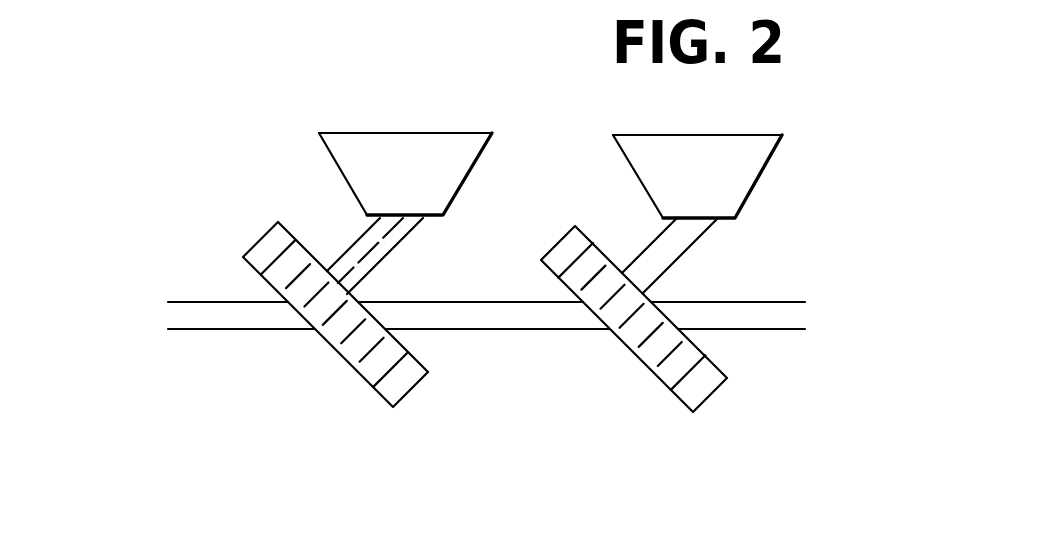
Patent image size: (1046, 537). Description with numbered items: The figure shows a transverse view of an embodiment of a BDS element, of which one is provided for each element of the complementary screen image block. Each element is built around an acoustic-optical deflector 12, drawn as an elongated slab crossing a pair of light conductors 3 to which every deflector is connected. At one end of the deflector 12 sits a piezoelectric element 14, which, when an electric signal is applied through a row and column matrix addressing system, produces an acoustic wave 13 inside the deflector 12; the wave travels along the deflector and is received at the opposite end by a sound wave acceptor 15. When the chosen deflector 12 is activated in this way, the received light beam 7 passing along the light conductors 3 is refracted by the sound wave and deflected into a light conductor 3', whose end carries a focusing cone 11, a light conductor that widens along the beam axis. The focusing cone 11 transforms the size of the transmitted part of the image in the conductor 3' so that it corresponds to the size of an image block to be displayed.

The light conductor 3 is at (487, 348).
The light conductor 3' is at (540, 256).
The light beam 7 is at (182, 314).
The focusing cone 11 is at (760, 146).
The acoustic-optical deflector 12 is at (370, 392).
The acoustic wave 13 is at (352, 332).
The piezoelectric element 14 is at (410, 378).
The sound wave acceptor 15 is at (268, 246).